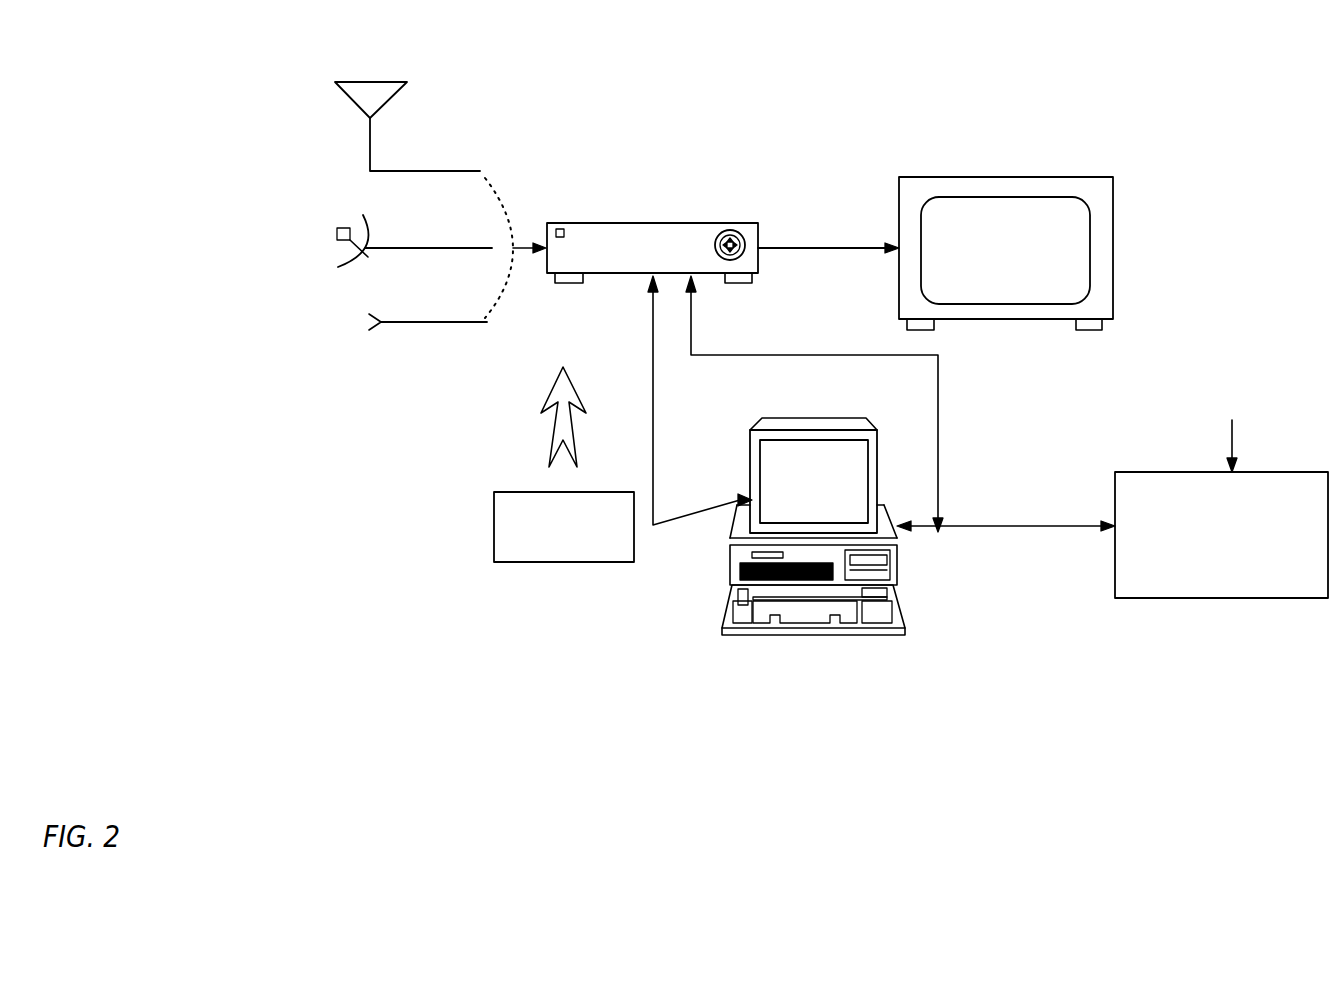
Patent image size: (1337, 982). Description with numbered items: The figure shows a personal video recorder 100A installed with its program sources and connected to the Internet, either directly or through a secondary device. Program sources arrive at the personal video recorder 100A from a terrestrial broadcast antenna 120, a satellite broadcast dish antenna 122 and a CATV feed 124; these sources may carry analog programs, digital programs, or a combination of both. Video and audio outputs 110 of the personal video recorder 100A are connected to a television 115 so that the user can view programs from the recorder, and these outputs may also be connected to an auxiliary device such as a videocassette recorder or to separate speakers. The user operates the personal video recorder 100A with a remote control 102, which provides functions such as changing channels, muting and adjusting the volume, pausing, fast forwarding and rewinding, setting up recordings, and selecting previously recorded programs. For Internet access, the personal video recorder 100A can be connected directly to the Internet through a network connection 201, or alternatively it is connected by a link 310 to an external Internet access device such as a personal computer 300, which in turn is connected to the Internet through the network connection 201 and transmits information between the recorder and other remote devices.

The terrestrial broadcast antenna 120 is at (383, 79).
The satellite broadcast dish antenna 122 is at (337, 233).
The CATV feed 124 is at (369, 322).
The personal video recorder 100A is at (608, 276).
The video and audio outputs 110 is at (828, 245).
The television 115 is at (1098, 175).
The connection between personal computer and personal video recorder 310 is at (653, 400).
The personal computer 300 is at (803, 417).
The remote control 102 is at (535, 565).
The network connection 201 is at (1160, 606).